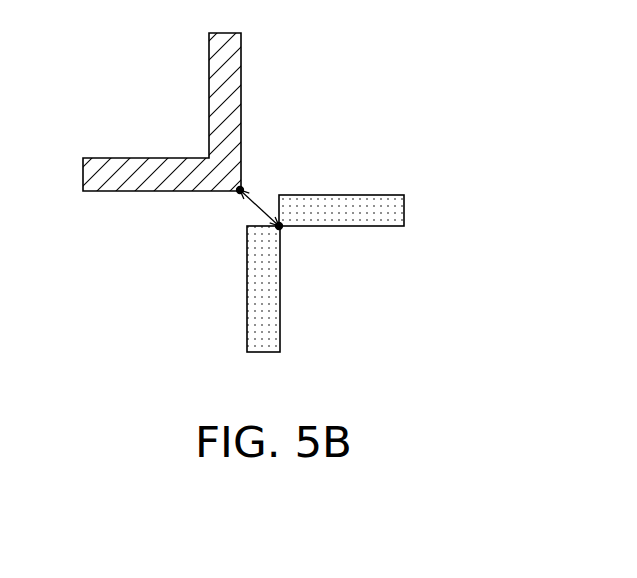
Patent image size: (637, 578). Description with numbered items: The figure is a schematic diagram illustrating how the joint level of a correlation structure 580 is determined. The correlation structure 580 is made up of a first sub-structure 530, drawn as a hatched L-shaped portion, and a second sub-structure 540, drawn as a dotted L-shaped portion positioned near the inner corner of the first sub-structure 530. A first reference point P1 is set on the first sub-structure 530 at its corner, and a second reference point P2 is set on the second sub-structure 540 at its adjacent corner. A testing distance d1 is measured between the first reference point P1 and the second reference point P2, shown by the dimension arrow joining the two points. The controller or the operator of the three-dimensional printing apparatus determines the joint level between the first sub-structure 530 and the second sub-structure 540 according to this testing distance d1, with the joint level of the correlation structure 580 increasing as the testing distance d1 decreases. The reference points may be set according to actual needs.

The first sub-structure 530 is at (241, 42).
The second sub-structure 540 is at (404, 212).
The first reference point P1 is at (242, 188).
The second reference point P2 is at (281, 227).
The testing distance d1 is at (260, 208).
The correlation structure 580 is at (270, 201).